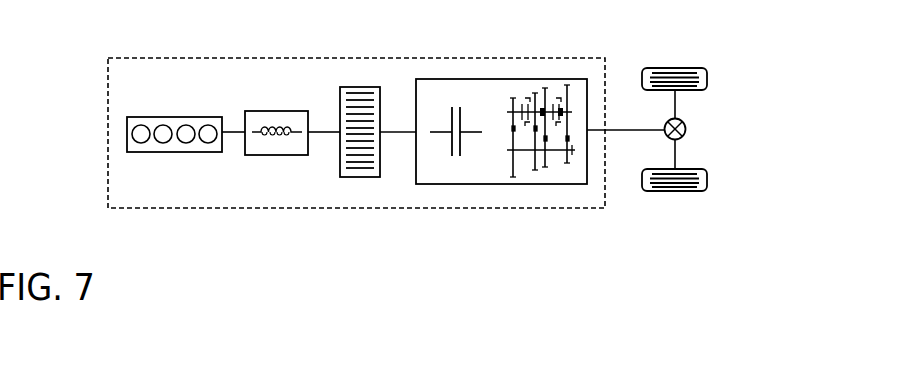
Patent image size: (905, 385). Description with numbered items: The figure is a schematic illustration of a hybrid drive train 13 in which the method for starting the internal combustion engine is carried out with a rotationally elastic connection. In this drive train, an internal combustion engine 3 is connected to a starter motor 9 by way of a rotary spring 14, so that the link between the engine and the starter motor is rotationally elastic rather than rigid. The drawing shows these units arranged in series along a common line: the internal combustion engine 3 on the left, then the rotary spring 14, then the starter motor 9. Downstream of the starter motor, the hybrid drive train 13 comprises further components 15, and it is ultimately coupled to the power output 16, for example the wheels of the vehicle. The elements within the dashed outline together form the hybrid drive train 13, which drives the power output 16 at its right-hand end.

The internal combustion engine 3 is at (173, 118).
The starter motor 9 is at (363, 89).
The hybrid drive train 13 is at (520, 207).
The rotary spring 14 is at (275, 111).
The further components 15 is at (473, 79).
The power output 16 is at (675, 75).